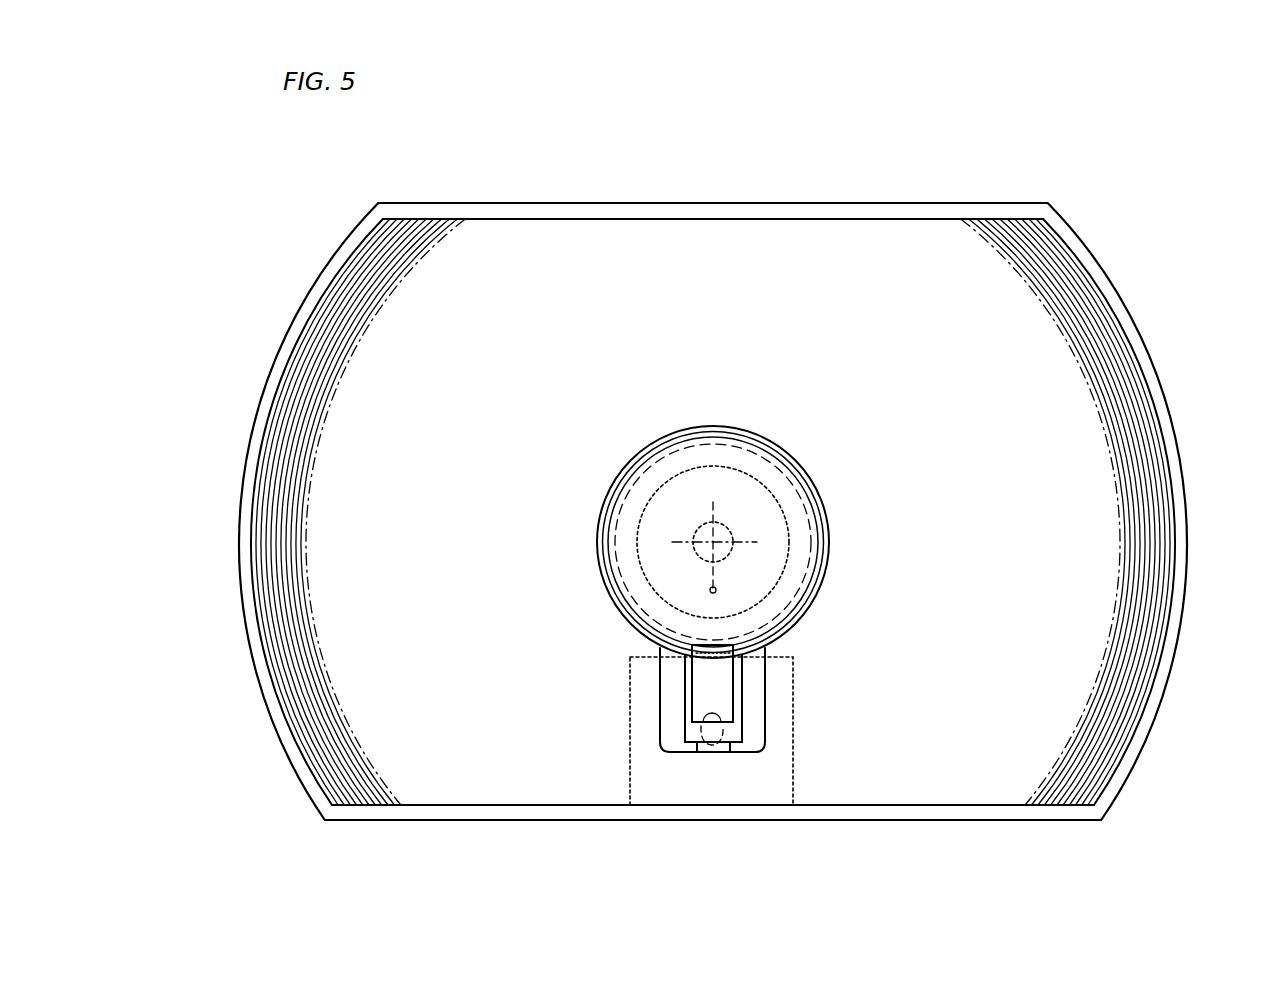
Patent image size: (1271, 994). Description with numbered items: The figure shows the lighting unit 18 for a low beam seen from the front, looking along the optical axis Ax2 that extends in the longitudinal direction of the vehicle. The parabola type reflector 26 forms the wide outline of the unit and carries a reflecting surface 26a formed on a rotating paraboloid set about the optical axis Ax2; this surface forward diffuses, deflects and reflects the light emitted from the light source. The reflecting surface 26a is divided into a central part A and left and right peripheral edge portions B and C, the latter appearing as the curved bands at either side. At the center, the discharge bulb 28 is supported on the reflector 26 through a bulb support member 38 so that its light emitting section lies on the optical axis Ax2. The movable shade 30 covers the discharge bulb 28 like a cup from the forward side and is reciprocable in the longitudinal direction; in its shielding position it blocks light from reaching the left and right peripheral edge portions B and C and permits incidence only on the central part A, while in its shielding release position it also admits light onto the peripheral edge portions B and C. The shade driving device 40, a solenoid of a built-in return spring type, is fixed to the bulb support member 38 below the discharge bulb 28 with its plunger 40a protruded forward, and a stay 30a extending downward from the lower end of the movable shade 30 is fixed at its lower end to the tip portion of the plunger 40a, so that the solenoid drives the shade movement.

The lighting unit 18 is at (1142, 214).
The reflector 26 is at (1138, 306).
The reflecting surface 26a is at (1075, 503).
The central part A is at (785, 247).
The left peripheral edge portion B is at (292, 397).
The right peripheral edge portion C is at (1133, 398).
The bulb support member 38 is at (772, 428).
The movable shade 30 is at (810, 470).
The discharge bulb 28 is at (684, 522).
The optical axis Ax2 is at (710, 548).
The stay 30a is at (690, 687).
The shade driving device 40 is at (822, 661).
The plunger 40a is at (707, 728).